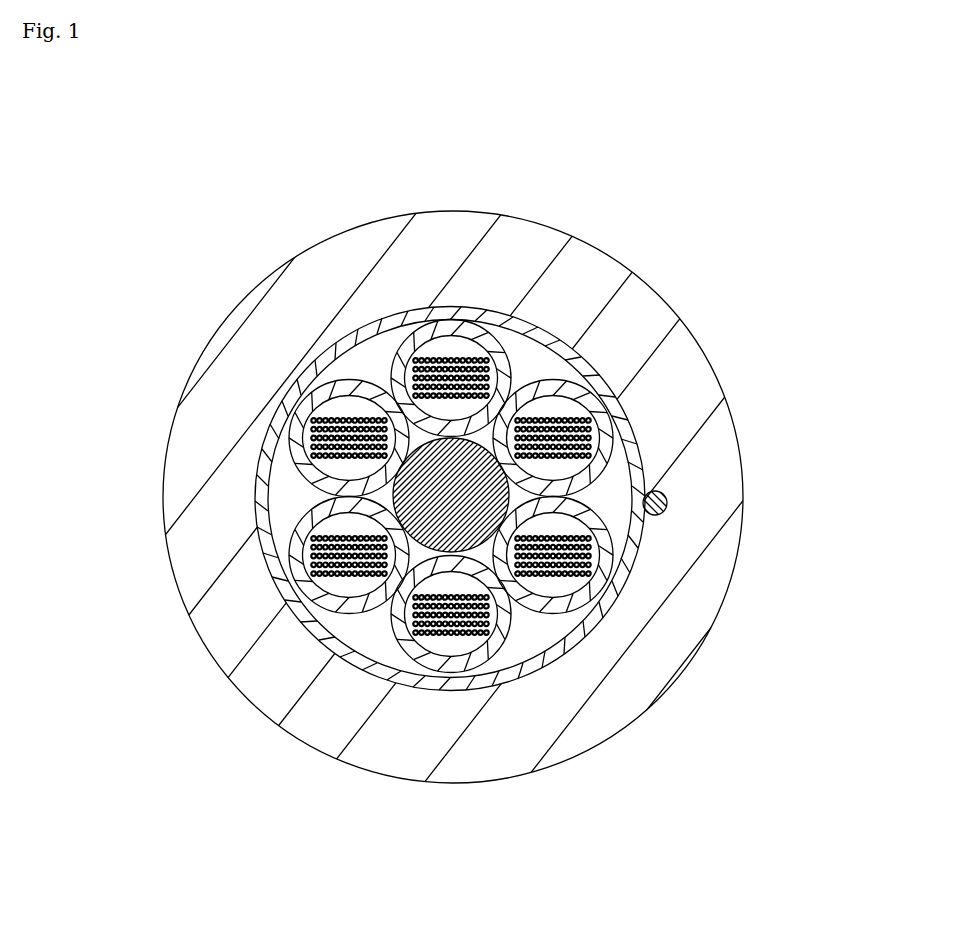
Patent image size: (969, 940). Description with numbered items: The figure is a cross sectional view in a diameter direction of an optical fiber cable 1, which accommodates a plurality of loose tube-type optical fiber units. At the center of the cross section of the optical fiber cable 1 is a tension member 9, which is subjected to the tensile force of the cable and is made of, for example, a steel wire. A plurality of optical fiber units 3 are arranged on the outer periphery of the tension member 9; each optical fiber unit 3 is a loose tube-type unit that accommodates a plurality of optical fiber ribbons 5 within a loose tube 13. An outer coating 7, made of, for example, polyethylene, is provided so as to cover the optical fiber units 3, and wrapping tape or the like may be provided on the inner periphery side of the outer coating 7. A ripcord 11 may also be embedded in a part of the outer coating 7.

The optical fiber cable 1 is at (484, 477).
The optical fiber unit 3 is at (347, 383).
The optical fiber ribbon 5 is at (325, 410).
The outer coating 7 is at (320, 722).
The tension member 9 is at (467, 525).
The ripcord 11 is at (663, 513).
The loose tube 13 is at (364, 390).